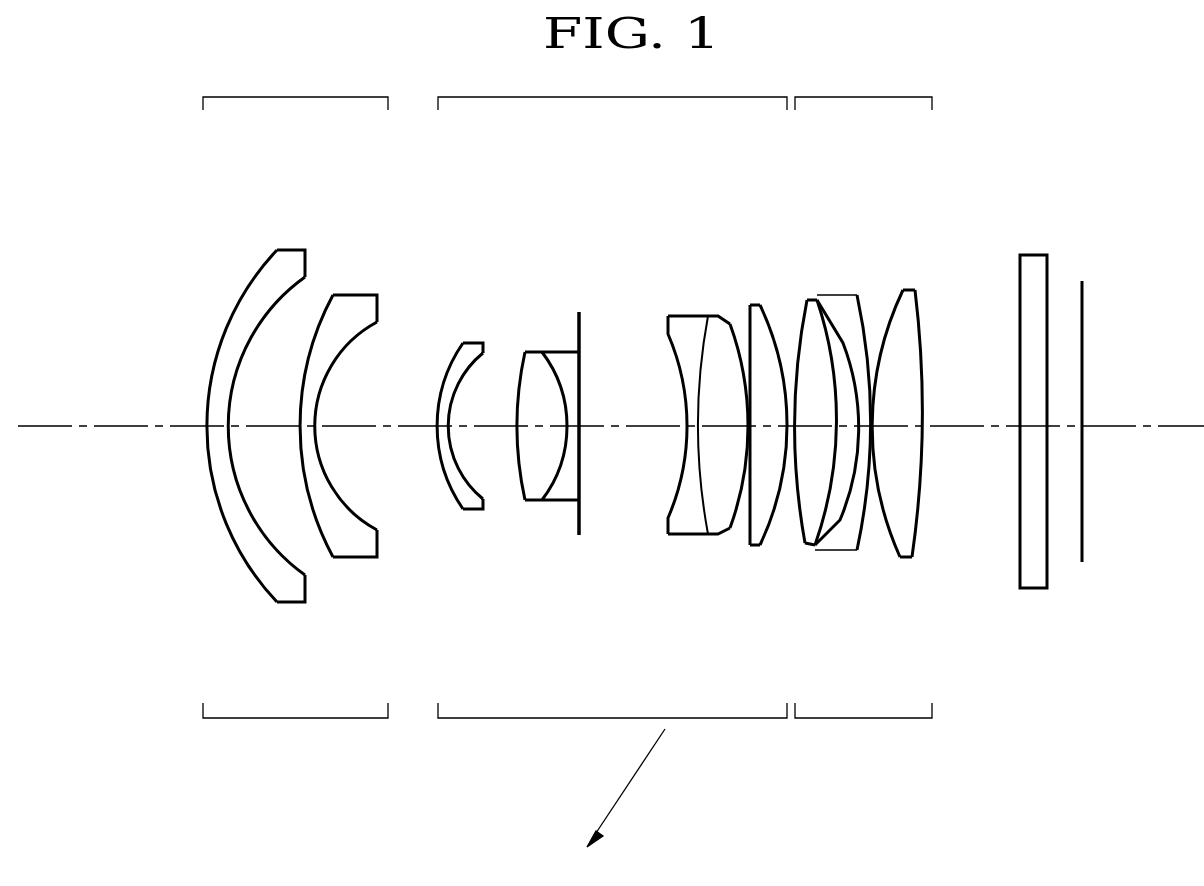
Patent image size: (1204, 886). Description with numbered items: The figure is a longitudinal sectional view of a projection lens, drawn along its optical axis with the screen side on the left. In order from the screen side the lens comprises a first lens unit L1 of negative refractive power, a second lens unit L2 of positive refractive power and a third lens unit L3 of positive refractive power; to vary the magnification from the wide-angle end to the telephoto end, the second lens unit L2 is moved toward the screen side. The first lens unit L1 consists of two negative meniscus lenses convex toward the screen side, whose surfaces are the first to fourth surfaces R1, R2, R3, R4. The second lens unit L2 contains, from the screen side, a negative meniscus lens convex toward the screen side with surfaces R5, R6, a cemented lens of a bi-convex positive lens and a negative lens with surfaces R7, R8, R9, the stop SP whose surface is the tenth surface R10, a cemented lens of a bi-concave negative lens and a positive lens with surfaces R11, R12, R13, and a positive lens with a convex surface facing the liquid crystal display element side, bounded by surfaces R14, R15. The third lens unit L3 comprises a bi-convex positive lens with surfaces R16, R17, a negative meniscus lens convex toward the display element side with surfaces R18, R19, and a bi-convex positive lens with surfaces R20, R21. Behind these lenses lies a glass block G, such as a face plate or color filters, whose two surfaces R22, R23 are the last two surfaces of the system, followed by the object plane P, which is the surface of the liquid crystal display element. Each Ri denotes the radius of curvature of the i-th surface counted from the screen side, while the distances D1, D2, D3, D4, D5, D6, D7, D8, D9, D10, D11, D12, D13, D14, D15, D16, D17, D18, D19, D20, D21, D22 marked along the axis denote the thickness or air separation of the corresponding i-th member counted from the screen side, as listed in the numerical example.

The first lens unit L1 is at (295, 390).
The second lens unit L2 is at (612, 390).
The third lens unit L3 is at (863, 390).
The first surface R1 is at (233, 310).
The second surface R2 is at (279, 300).
The third surface R3 is at (313, 333).
The fourth surface R4 is at (353, 333).
The fifth surface R5 is at (440, 383).
The sixth surface R6 is at (470, 360).
The seventh surface R7 is at (517, 387).
The eighth surface R8 is at (552, 367).
The ninth surface R9 is at (577, 373).
The tenth surface R10 is at (583, 323).
The stop SP is at (613, 375).
The eleventh surface R11 is at (672, 345).
The twelfth surface R12 is at (702, 355).
The thirteenth surface R13 is at (730, 327).
The fourteenth surface R14 is at (753, 347).
The fifteenth surface R15 is at (773, 333).
The sixteenth surface R16 is at (798, 350).
The seventeenth surface R17 is at (830, 335).
The eighteenth surface R18 is at (845, 345).
The nineteenth surface R19 is at (862, 335).
The twentieth surface R20 is at (893, 313).
The twenty-first surface R21 is at (922, 313).
The twenty-second surface R22 is at (1014, 302).
The twenty-third surface R23 is at (1052, 300).
The first member thickness D1 is at (220, 427).
The second member separation D2 is at (268, 428).
The third member thickness D3 is at (307, 428).
The fourth member separation D4 is at (380, 428).
The fifth member thickness D5 is at (440, 428).
The sixth member separation D6 is at (482, 428).
The seventh member thickness D7 is at (520, 428).
The eighth member thickness D8 is at (571, 428).
The ninth member separation D9 is at (583, 428).
The tenth member separation D10 is at (633, 428).
The eleventh member thickness D11 is at (693, 427).
The twelfth member thickness D12 is at (725, 427).
The thirteenth member separation D13 is at (750, 427).
The fourteenth member thickness D14 is at (768, 427).
The fifteenth member separation D15 is at (791, 427).
The sixteenth member thickness D16 is at (815, 427).
The seventeenth member separation D17 is at (848, 427).
The eighteenth member thickness D18 is at (865, 427).
The nineteenth member separation D19 is at (873, 430).
The twentieth member thickness D20 is at (898, 428).
The twenty-first member separation D21 is at (966, 427).
The twenty-second member thickness D22 is at (1035, 430).
The glass block G is at (1035, 276).
The object plane P is at (1082, 325).